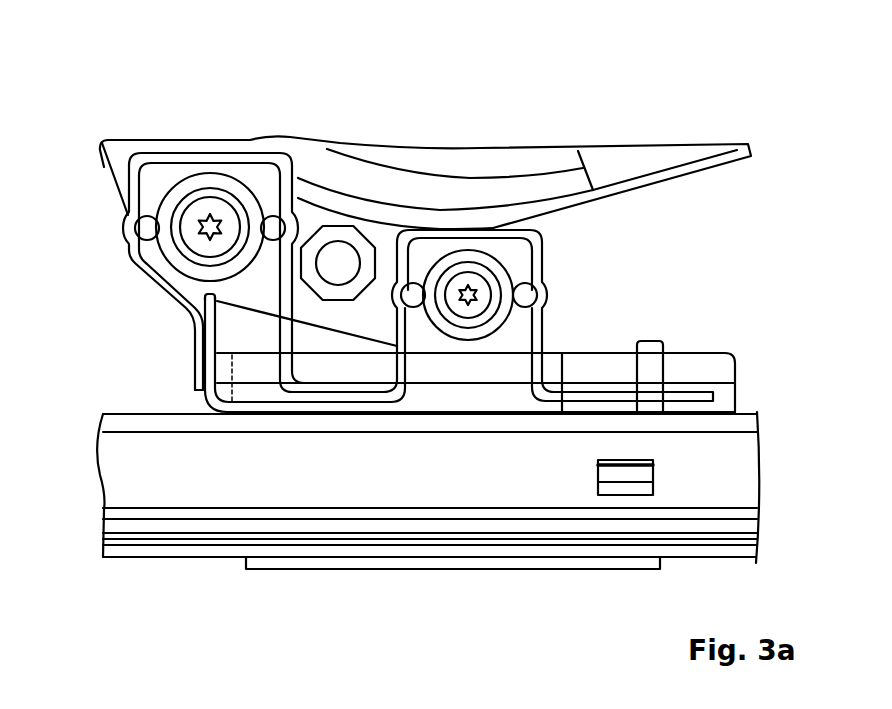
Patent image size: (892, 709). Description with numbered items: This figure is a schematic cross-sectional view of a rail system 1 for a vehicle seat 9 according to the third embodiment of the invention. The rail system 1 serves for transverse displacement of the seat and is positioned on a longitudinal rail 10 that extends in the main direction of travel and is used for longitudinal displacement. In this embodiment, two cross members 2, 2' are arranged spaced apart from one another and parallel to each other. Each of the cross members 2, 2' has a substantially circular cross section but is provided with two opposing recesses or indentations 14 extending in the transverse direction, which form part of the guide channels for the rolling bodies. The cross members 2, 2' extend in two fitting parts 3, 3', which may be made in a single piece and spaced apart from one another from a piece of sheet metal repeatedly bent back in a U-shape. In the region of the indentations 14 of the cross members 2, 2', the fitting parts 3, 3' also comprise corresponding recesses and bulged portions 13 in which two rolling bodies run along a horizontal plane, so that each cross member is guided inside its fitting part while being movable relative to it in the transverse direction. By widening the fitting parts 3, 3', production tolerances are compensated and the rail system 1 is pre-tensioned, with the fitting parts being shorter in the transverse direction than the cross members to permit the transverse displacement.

The rail system 1 is at (92, 230).
The cross member 2 is at (167, 242).
The cross member 2' is at (521, 295).
The fitting part 3 is at (243, 282).
The fitting part 3' is at (548, 308).
The vehicle seat 9 is at (522, 120).
The longitudinal rail 10 is at (208, 578).
The bulged portion 13 is at (430, 305).
The indentation 14 is at (538, 294).